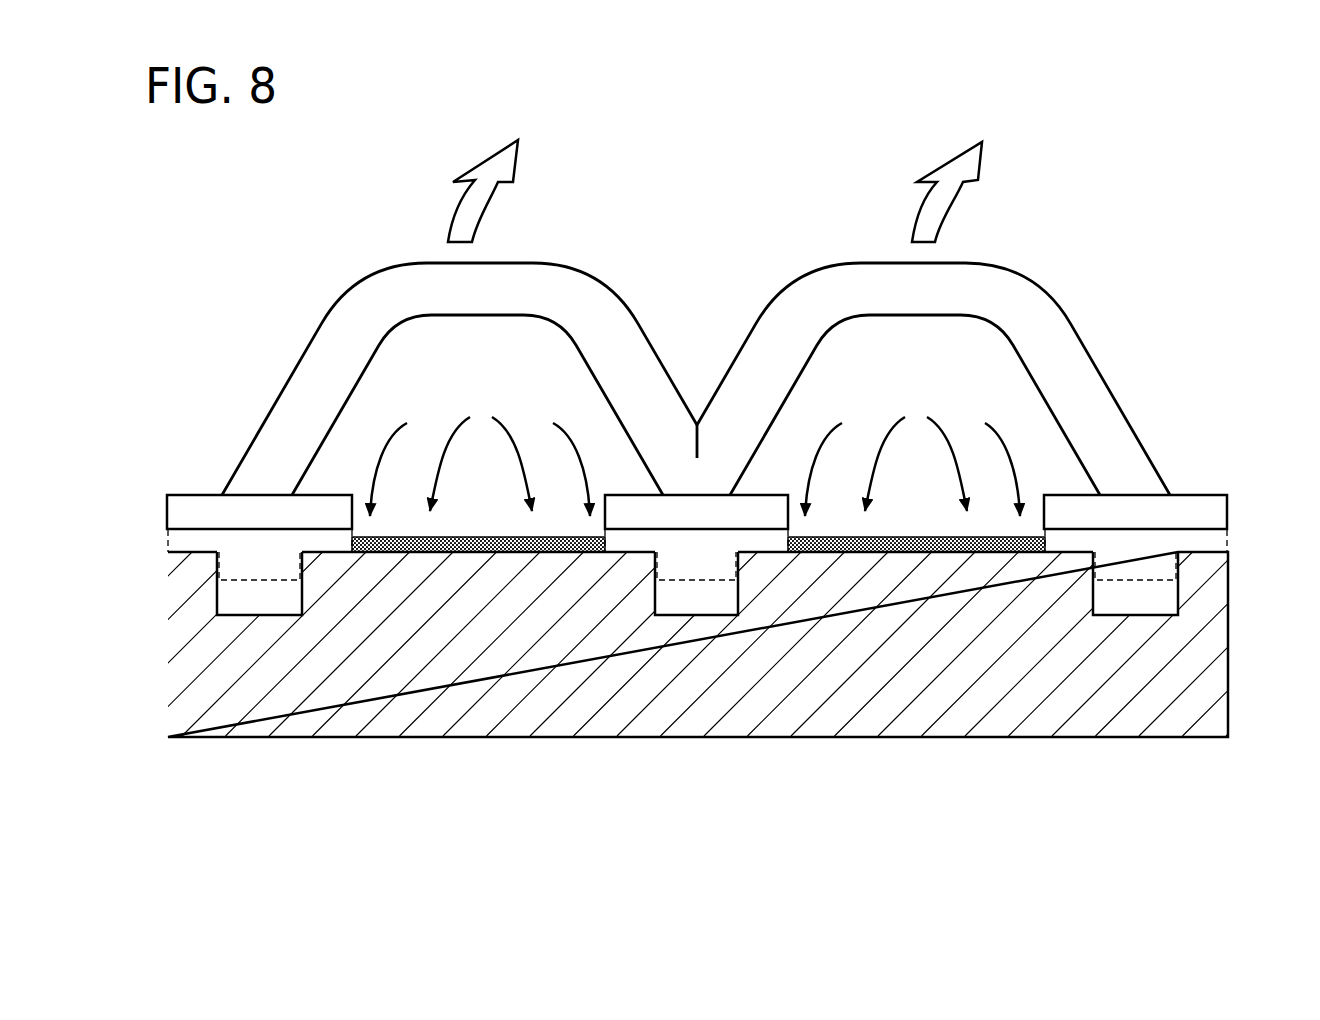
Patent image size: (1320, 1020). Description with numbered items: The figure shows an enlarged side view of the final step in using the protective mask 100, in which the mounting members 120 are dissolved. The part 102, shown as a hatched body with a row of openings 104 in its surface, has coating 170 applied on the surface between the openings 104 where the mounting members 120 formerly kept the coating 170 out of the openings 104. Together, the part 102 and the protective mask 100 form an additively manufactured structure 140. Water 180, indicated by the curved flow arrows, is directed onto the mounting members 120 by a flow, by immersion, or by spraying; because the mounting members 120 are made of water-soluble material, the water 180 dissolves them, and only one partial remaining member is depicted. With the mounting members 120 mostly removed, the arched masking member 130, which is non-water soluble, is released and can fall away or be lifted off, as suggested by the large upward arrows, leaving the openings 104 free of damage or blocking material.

The protective mask 100 is at (710, 366).
The part 102 is at (1228, 596).
The openings 104 is at (267, 615).
The mounting member 120 is at (193, 540).
The masking member 130 is at (960, 249).
The additively manufactured structure 140 is at (1040, 284).
The coating 170 is at (473, 552).
The water 180 is at (392, 427).